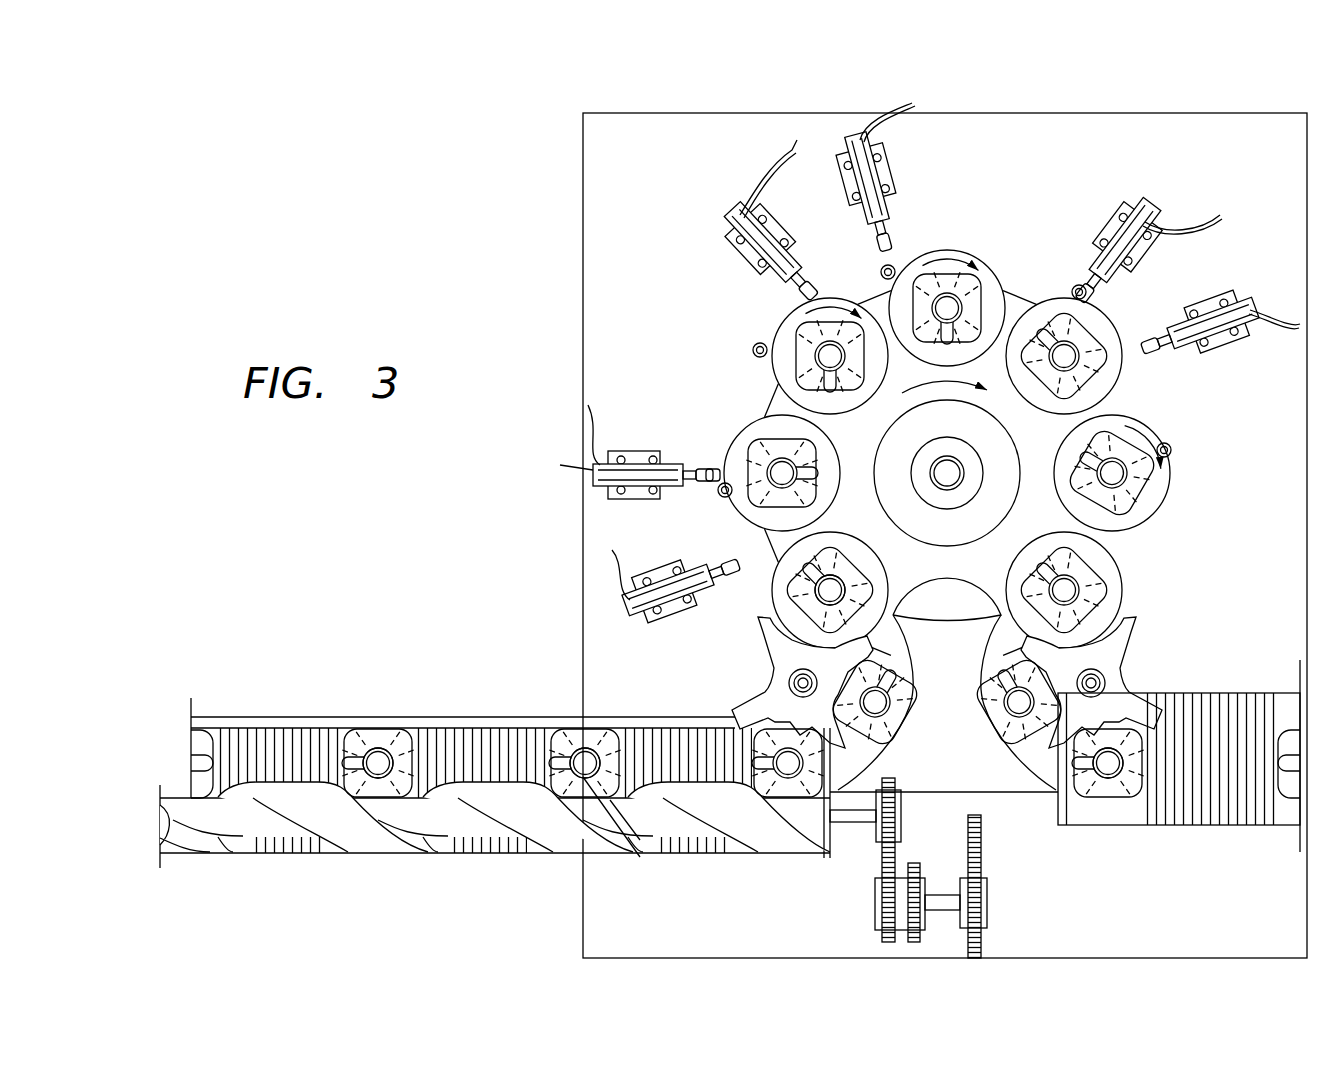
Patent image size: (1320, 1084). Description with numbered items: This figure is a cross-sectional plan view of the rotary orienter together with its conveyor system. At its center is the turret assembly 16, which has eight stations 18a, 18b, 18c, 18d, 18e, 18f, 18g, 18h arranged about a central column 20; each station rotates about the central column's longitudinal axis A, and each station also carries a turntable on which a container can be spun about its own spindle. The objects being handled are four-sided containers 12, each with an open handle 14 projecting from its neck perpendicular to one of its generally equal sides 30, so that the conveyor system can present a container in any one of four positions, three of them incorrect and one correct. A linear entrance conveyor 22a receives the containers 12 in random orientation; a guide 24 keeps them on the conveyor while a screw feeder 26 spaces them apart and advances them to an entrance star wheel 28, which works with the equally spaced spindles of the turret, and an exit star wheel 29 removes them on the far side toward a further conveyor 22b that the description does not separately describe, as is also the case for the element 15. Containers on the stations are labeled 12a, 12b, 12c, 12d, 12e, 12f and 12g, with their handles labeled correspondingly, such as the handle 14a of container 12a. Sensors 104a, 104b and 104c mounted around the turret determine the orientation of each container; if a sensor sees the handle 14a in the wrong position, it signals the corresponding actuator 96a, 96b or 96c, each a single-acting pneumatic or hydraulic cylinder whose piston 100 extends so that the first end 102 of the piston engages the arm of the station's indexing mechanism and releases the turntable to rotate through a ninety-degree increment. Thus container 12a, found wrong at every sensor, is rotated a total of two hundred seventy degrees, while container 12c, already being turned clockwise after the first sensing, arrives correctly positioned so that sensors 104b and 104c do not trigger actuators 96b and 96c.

The container 12 is at (350, 733).
The container 12a is at (872, 577).
The container 12b is at (818, 503).
The container 12c is at (851, 392).
The container 12d is at (982, 276).
The container 12e is at (1100, 365).
The container 12f is at (1150, 488).
The container 12g is at (1099, 610).
The open handle 14 is at (382, 742).
The handle 14a is at (830, 605).
The feed screw 15 is at (347, 763).
The turret assembly 16 is at (772, 397).
The station 18a is at (773, 598).
The station 18b is at (735, 430).
The station 18c is at (776, 322).
The station 18d is at (962, 250).
The station 18e is at (1118, 318).
The station 18f is at (1173, 468).
The station 18g is at (1126, 589).
The station 18h is at (990, 592).
The central column 20 is at (963, 473).
The linear entrance conveyor 22a is at (470, 852).
The outfeed conveyor 22b is at (1193, 830).
The guide 24 is at (450, 728).
The screw feeder 26 is at (363, 823).
The entrance star wheel 28 is at (760, 692).
The exit star wheel 29 is at (1122, 671).
The sides 30 is at (578, 762).
The actuator 96a is at (636, 480).
The actuator 96b is at (863, 180).
The actuator 96c is at (1225, 320).
The piston 100 is at (696, 470).
The first end of piston 102 is at (708, 480).
The sensor 104a is at (660, 590).
The sensor 104b is at (753, 228).
The sensor 104c is at (1128, 208).
The longitudinal axis A is at (948, 474).